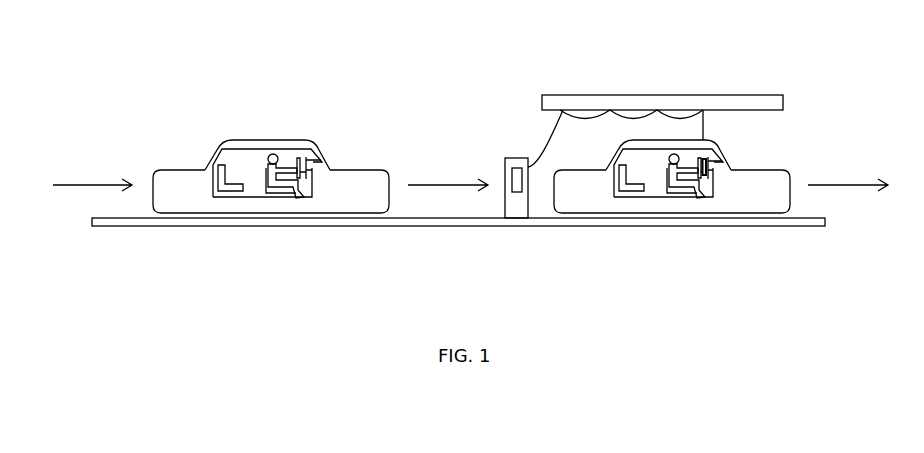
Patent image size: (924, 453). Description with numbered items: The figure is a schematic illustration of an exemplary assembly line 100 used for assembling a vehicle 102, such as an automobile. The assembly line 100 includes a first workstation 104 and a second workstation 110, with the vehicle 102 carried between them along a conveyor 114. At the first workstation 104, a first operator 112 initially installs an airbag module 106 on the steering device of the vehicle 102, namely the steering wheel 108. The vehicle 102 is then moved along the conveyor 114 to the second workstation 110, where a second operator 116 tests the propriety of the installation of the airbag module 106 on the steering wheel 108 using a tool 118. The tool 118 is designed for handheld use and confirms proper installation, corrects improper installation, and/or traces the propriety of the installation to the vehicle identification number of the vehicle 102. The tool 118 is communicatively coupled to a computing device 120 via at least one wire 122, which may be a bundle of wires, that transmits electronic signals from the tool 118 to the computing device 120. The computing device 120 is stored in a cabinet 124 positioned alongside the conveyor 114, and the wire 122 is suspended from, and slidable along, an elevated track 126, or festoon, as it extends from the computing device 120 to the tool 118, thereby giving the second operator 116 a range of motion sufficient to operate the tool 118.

The assembly line 100 is at (345, 43).
The vehicle 102 is at (223, 138).
The first workstation 104 is at (249, 263).
The airbag module 106 is at (300, 158).
The steering wheel 108 is at (318, 157).
The second workstation 110 is at (650, 263).
The first operator 112 is at (272, 154).
The conveyor 114 is at (401, 217).
The second operator 116 is at (676, 153).
The tool 118 is at (706, 157).
The computing device 120 is at (513, 158).
The wire 122 is at (590, 118).
The cabinet 124 is at (505, 167).
The elevated track 126 is at (640, 95).